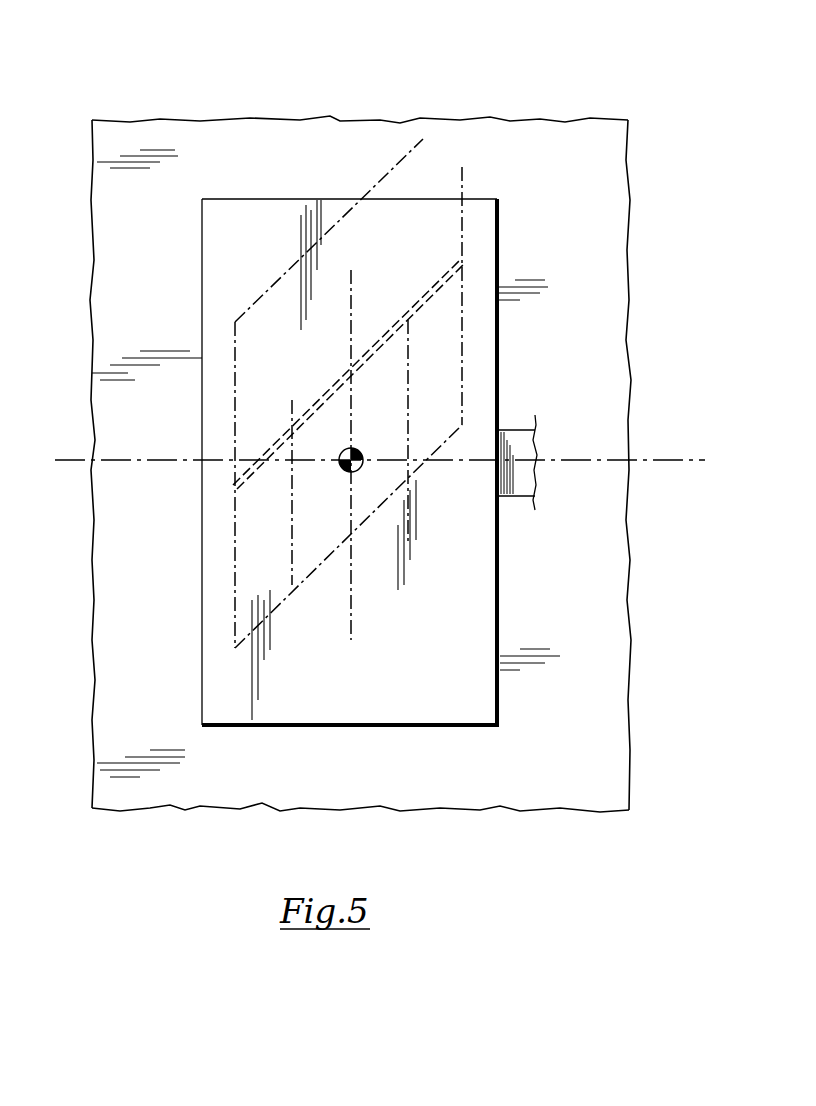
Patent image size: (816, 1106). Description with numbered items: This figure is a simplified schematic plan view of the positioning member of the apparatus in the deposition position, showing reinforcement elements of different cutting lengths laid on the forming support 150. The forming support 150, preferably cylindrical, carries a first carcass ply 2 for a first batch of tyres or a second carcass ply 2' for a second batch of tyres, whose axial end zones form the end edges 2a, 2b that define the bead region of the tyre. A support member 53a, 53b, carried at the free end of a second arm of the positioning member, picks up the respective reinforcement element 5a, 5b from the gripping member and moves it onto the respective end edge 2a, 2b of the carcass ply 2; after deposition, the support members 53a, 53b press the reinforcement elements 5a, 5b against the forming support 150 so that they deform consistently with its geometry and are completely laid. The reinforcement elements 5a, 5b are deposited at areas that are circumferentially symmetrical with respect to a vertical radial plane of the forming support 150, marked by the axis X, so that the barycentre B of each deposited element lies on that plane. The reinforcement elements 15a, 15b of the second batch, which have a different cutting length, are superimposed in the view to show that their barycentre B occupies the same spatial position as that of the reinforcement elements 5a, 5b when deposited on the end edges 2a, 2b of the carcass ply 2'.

The first carcass ply 2 is at (359, 459).
The second carcass ply 2' is at (359, 459).
The end edge 2a is at (359, 459).
The end edge 2b is at (359, 459).
The forming support 150 is at (147, 178).
The support member 53a is at (402, 527).
The support member 53b is at (440, 698).
The reinforcement element 5a is at (412, 393).
The reinforcement element 5b is at (448, 378).
The reinforcement element 15a is at (348, 374).
The reinforcement element 15b is at (317, 452).
The section axis X- X is at (68, 458).
The barycentre B is at (355, 468).